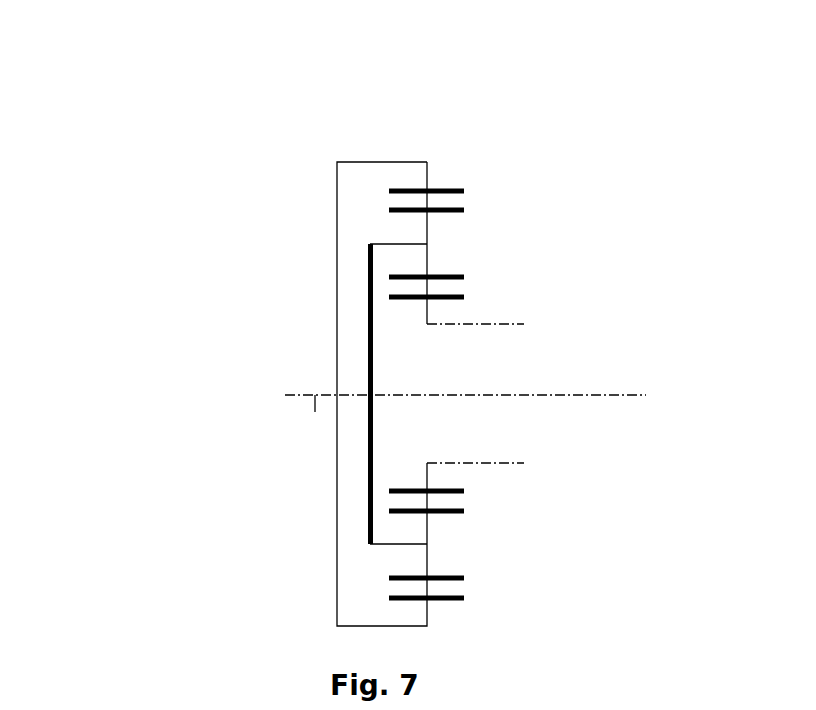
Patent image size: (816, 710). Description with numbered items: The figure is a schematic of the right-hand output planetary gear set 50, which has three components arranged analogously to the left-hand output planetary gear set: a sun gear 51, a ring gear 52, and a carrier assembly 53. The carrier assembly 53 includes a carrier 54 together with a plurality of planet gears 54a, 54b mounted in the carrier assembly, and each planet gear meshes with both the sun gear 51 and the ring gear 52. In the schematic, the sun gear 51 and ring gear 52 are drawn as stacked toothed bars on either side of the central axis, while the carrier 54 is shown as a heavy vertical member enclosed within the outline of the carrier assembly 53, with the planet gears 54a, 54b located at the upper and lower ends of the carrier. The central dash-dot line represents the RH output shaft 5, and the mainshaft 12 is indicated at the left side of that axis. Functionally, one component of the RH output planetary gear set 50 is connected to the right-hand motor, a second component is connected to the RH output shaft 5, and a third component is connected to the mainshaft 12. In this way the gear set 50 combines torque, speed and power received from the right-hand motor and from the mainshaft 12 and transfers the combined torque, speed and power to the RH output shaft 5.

The RH output planetary gear set 50 is at (218, 83).
The carrier assembly 53 is at (230, 281).
The carrier 54 is at (368, 342).
The planet gear 54a is at (407, 213).
The planet gear 54b is at (393, 578).
The ring gear 52 is at (445, 189).
The sun gear 51 is at (445, 299).
The RH output shaft 5 is at (531, 393).
The mainshaft 12 is at (315, 412).